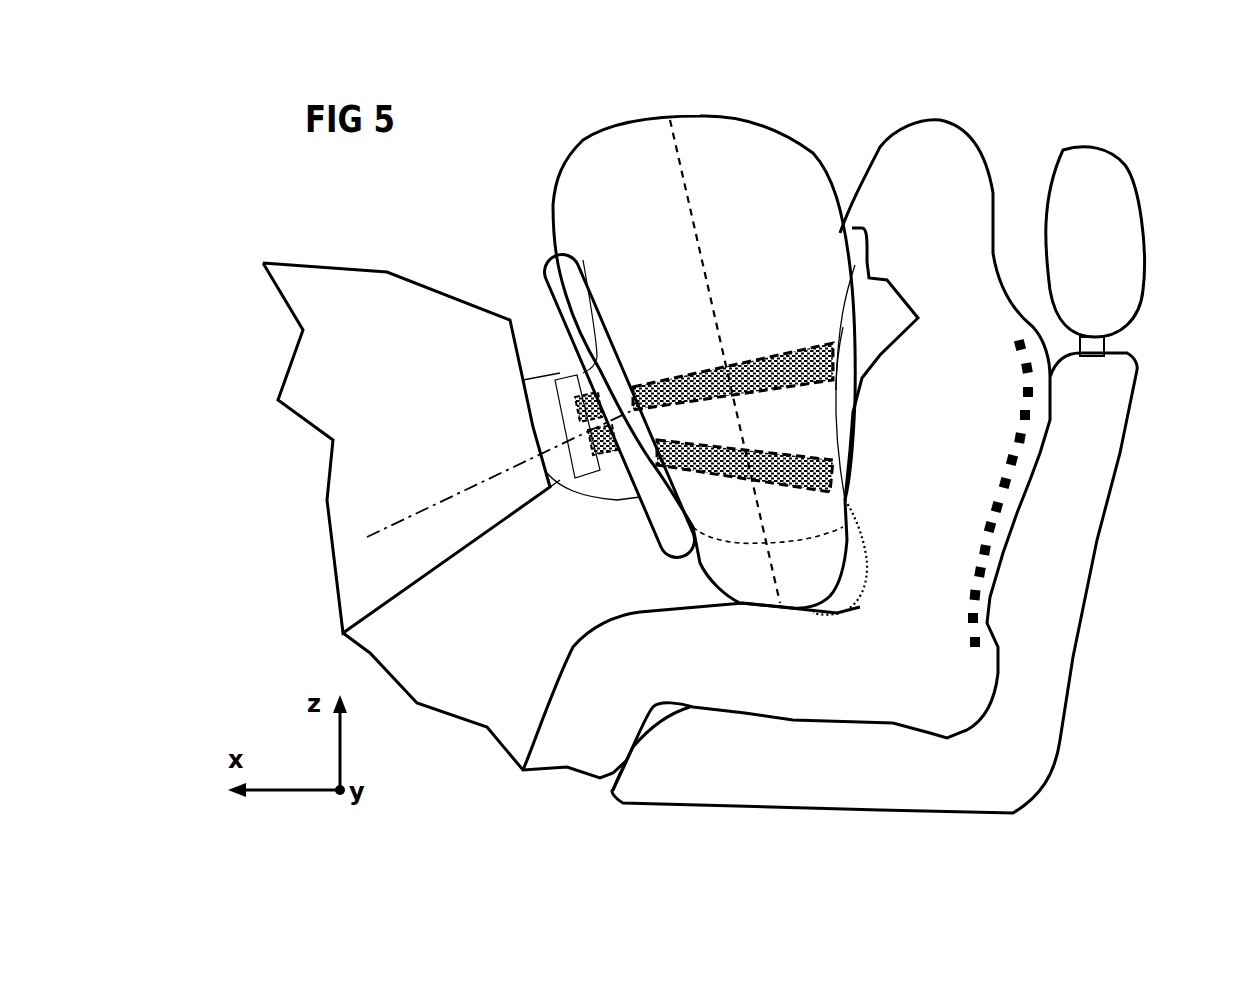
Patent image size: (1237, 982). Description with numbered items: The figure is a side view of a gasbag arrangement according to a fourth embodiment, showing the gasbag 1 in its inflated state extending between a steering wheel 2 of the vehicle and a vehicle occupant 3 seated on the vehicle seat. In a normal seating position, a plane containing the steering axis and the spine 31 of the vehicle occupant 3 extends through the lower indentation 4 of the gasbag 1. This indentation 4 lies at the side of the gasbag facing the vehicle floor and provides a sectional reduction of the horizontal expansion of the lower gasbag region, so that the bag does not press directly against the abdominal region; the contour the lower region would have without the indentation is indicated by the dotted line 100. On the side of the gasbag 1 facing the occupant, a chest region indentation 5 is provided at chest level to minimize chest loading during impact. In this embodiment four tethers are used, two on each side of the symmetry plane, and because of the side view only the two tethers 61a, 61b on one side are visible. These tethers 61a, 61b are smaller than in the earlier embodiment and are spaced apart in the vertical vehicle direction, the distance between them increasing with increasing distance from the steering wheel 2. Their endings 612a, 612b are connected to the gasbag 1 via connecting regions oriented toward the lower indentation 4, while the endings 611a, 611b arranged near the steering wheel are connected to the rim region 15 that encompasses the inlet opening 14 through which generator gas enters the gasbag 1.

The gasbag 1 is at (806, 122).
The steering wheel 2 is at (632, 540).
The vehicle occupant 3 is at (1016, 155).
The indentation 4 is at (790, 574).
The chest region indentation 5 is at (848, 386).
The inlet opening 14 is at (577, 430).
The rim region 15 is at (578, 420).
The spine 31 is at (1007, 502).
The tether 61a is at (770, 372).
The tether 61b is at (790, 482).
The dotted line 100 is at (872, 566).
The ending 611a is at (597, 400).
The ending 611b is at (603, 455).
The ending 612a is at (846, 322).
The ending 612b is at (817, 470).